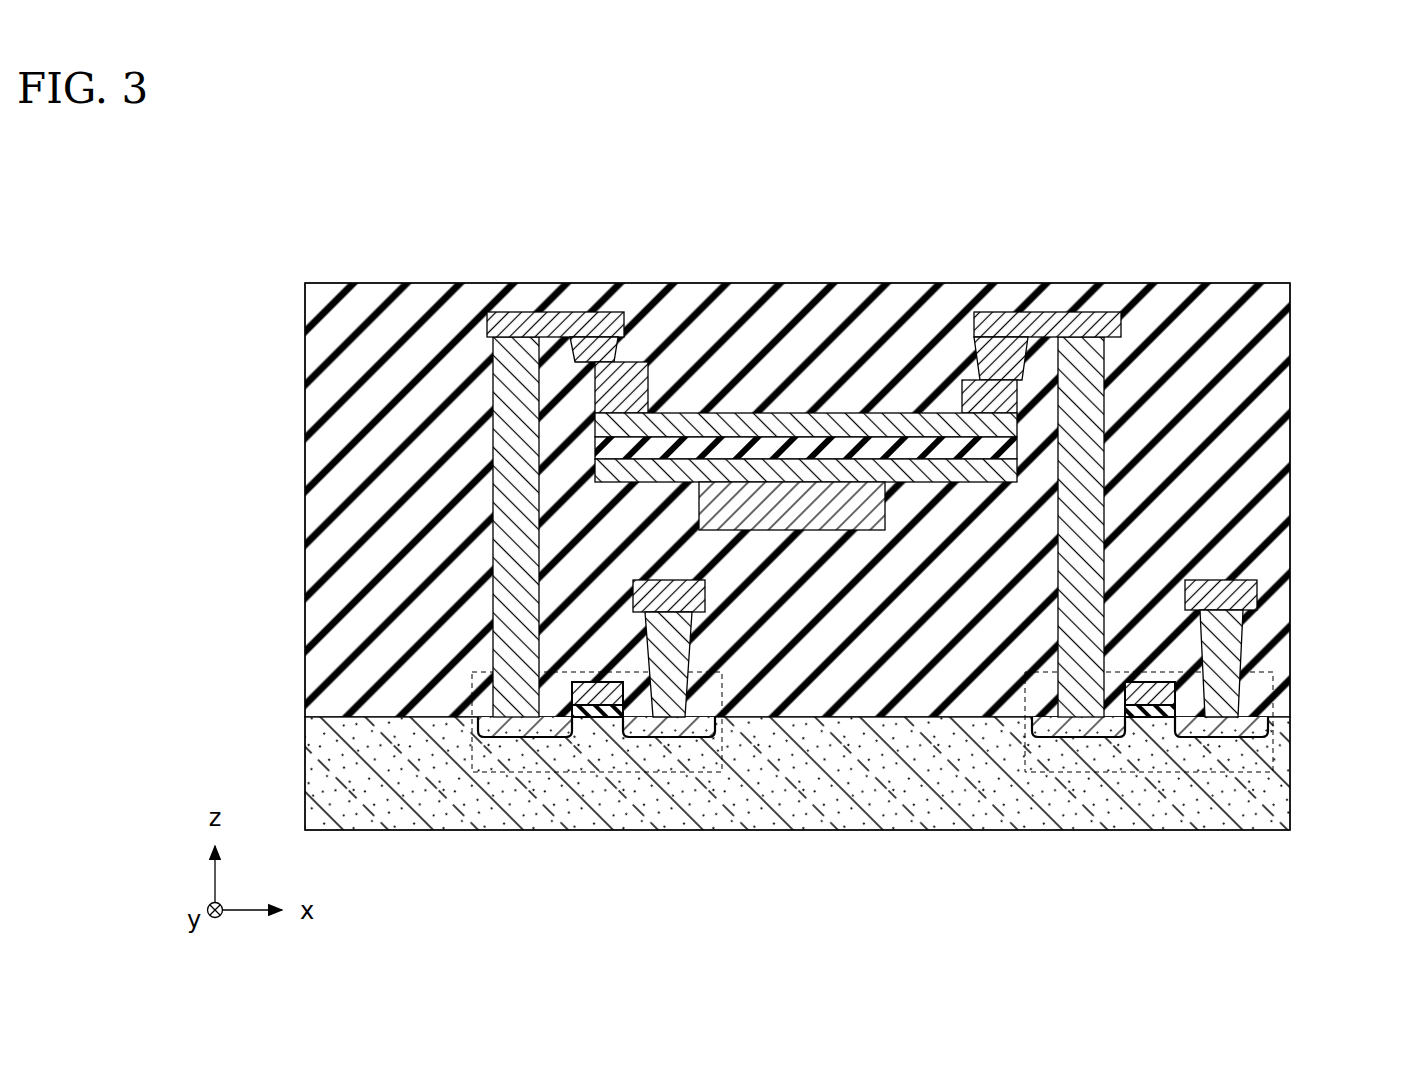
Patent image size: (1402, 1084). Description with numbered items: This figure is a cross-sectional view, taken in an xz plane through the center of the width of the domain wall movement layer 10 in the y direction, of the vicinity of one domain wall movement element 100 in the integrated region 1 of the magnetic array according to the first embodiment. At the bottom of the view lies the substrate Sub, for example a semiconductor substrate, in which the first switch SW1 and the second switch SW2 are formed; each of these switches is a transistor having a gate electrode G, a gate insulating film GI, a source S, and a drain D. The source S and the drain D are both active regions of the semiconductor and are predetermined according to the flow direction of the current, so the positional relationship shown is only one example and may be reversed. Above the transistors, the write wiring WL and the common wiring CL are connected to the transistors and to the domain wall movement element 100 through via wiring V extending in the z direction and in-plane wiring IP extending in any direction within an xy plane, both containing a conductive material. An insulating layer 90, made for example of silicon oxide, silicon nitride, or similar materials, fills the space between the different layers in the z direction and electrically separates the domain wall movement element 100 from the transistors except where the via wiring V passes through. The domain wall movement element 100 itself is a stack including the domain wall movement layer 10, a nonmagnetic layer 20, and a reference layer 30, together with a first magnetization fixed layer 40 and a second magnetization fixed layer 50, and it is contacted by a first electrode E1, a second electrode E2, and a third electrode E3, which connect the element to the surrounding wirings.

The integrated region 1 is at (1223, 220).
The domain wall movement element 100 is at (806, 339).
The domain wall movement layer 10 is at (762, 426).
The nonmagnetic layer 20 is at (811, 447).
The reference layer 30 is at (873, 470).
The first magnetization fixed layer 40 is at (641, 368).
The second magnetization fixed layer 50 is at (1004, 380).
The insulating layer 90 is at (1232, 508).
The first electrode E1 is at (600, 348).
The second electrode E2 is at (991, 356).
The third electrode E3 is at (717, 506).
The in-plane wiring IP is at (545, 325).
The via wiring V is at (505, 470).
The write wiring WL is at (648, 592).
The common wiring CL is at (1243, 597).
The substrate Sub is at (1265, 793).
The source S is at (503, 730).
The gate electrode G is at (594, 700).
The gate insulating film GI is at (607, 712).
The drain D is at (665, 735).
The first switch SW1 is at (472, 772).
The second switch SW2 is at (1022, 772).